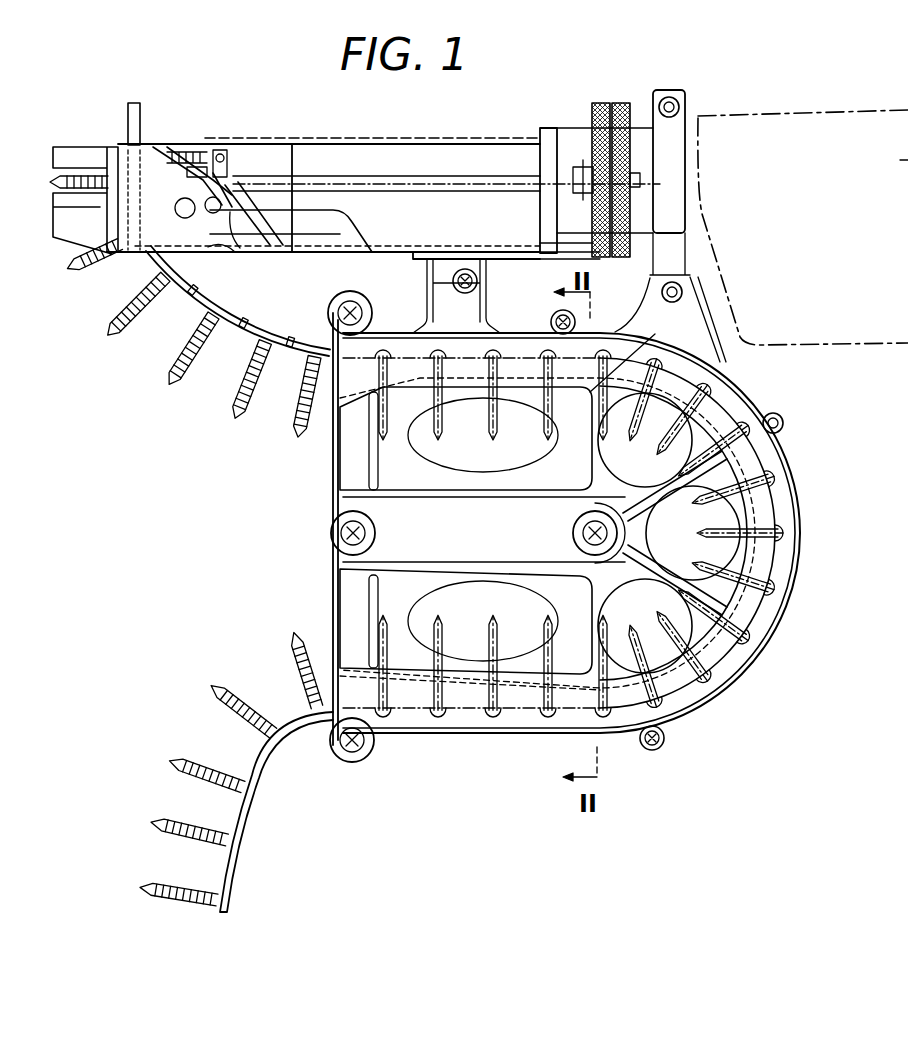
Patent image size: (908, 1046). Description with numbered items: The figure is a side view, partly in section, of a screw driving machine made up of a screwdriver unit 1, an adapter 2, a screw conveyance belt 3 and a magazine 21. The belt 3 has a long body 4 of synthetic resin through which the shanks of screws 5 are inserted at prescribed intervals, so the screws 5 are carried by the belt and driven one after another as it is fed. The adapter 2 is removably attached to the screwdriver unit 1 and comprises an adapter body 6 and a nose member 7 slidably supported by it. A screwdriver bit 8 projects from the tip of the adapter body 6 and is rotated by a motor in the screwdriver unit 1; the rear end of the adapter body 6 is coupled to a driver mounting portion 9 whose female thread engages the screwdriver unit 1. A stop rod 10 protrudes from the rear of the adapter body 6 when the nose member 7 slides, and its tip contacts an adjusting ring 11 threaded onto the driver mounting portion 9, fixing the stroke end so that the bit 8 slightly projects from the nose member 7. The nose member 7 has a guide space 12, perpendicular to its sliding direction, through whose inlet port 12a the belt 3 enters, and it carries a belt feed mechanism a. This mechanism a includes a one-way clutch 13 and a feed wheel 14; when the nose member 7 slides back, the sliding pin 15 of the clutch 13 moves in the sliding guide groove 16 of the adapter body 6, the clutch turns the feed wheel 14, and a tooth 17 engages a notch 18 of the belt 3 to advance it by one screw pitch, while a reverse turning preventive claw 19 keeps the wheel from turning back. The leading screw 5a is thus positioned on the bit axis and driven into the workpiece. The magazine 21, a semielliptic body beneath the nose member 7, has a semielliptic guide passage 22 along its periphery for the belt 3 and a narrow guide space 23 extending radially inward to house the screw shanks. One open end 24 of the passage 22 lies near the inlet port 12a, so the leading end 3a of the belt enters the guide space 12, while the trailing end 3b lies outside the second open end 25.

The screwdriver unit 1 is at (820, 357).
The adapter 2 is at (333, 131).
The screw conveyance belt 3 is at (182, 393).
The leading end of screw conveyance belt 3a is at (130, 124).
The trailing end of screw conveyance belt 3b is at (215, 865).
The long body 4 is at (256, 326).
The screws 5 is at (235, 393).
The leading screw 5a is at (72, 190).
The adapter body 6 is at (397, 138).
The nose member 7 is at (188, 165).
The screwdriver bit 8 is at (427, 187).
The driver mounting portion 9 is at (640, 143).
The stop rod 10 is at (560, 240).
The adjusting ring 11 is at (600, 258).
The guide space 12 is at (75, 238).
The inlet port 12a is at (210, 267).
The one-way clutch 13 is at (245, 235).
The feed wheel 14 is at (190, 170).
The sliding pin 15 is at (225, 195).
The sliding guide groove 16 is at (305, 232).
The tooth 17 is at (226, 183).
The notch 18 is at (183, 307).
The reverse turning preventive claw 19 is at (224, 150).
The magazine 21 is at (801, 540).
The guide passage 22 is at (572, 652).
The narrow guide space 23 is at (548, 738).
The open end 24 is at (327, 400).
The second open end 25 is at (332, 700).
The screw conveyance belt feed mechanism a is at (232, 180).